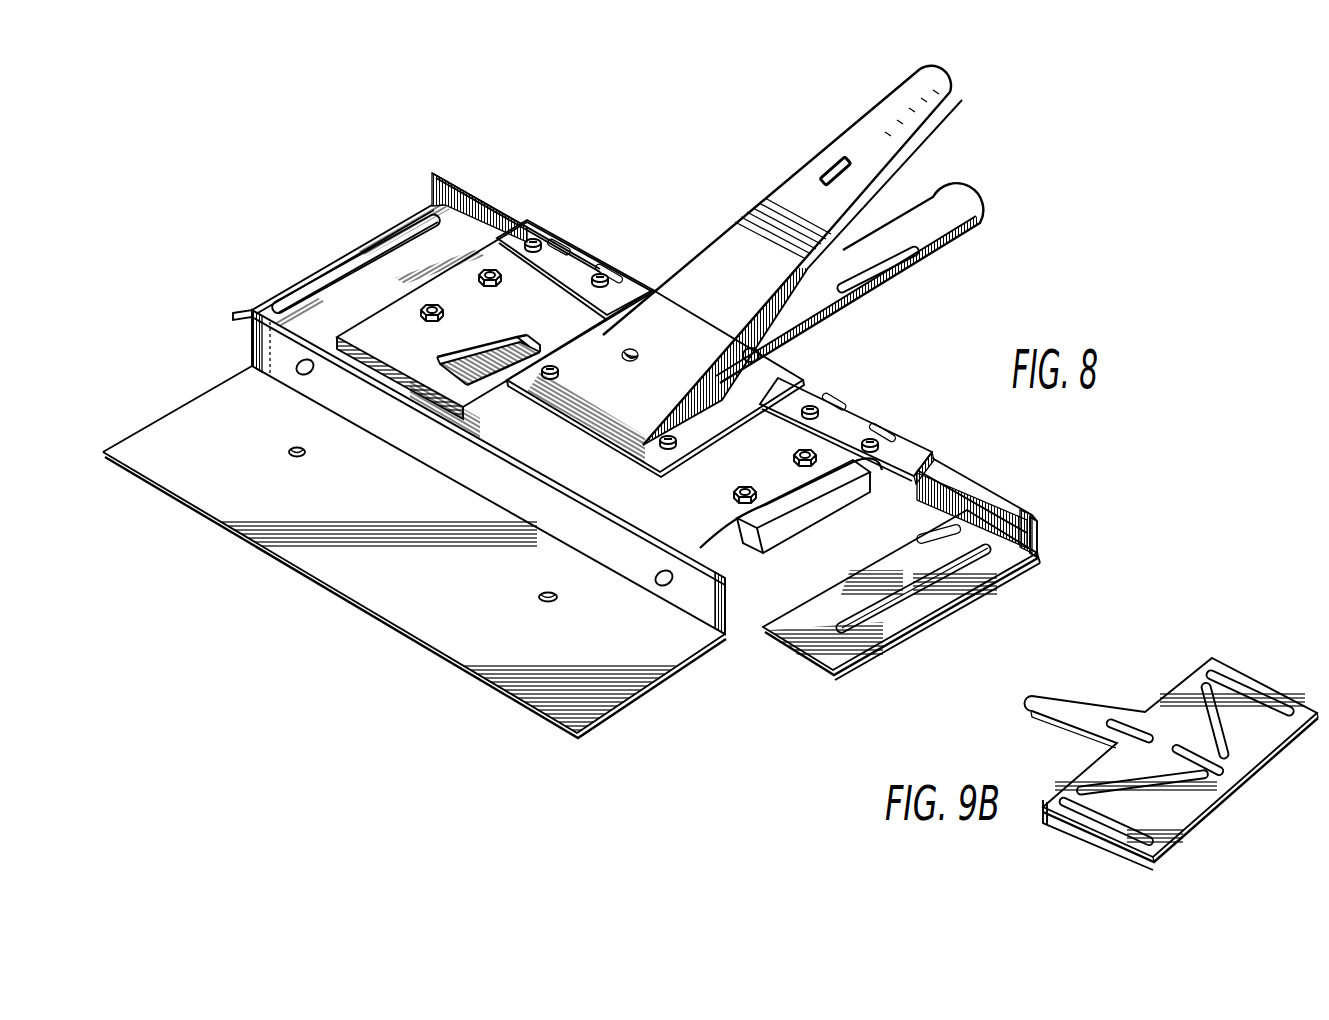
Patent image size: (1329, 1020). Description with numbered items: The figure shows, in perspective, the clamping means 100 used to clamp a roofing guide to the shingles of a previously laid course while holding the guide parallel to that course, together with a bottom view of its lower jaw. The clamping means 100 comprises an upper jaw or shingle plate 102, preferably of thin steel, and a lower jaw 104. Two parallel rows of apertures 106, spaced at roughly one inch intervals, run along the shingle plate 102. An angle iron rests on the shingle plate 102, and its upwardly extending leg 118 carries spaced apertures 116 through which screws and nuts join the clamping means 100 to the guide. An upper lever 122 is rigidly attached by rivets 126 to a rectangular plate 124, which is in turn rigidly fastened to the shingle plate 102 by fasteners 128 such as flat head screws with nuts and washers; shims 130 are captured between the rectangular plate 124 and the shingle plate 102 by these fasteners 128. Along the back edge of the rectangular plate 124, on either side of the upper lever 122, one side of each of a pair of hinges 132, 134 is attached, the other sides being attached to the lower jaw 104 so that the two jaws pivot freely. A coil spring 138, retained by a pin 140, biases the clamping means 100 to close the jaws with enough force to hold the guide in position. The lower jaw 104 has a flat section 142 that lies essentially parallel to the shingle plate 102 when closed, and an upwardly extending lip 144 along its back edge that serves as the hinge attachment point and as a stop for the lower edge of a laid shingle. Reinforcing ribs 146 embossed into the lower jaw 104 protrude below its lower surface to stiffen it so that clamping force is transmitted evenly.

In FIG. 8, the clamping means 100 is at (637, 188).
In FIG. 8, the shingle plate 102 is at (450, 640).
In FIG. 8, the lower jaw 104 is at (827, 607).
In FIG. 9B, the lower jaw 104 is at (1226, 657).
In FIG. 8, the apertures 106 is at (305, 454).
In FIG. 8, the spaced apertures 116 is at (312, 372).
In FIG. 8, the upwardly extending leg 118 is at (457, 462).
In FIG. 8, the upper lever 122 is at (858, 128).
In FIG. 8, the rectangular plate 124 is at (550, 288).
In FIG. 8, the rivets 126 is at (550, 362).
In FIG. 8, the fasteners 128 is at (490, 291).
In FIG. 8, the shims 130 is at (470, 362).
In FIG. 8, the hinge 132 is at (853, 425).
In FIG. 8, the hinge 134 is at (588, 263).
In FIG. 8, the coil spring 138 is at (872, 283).
In FIG. 8, the pin 140 is at (744, 354).
In FIG. 8, the flat section 142 is at (935, 625).
In FIG. 9B, the flat section 142 is at (1093, 847).
In FIG. 8, the upwardly extending lip 144 is at (1033, 520).
In FIG. 9B, the reinforcing ribs 146 is at (1188, 745).